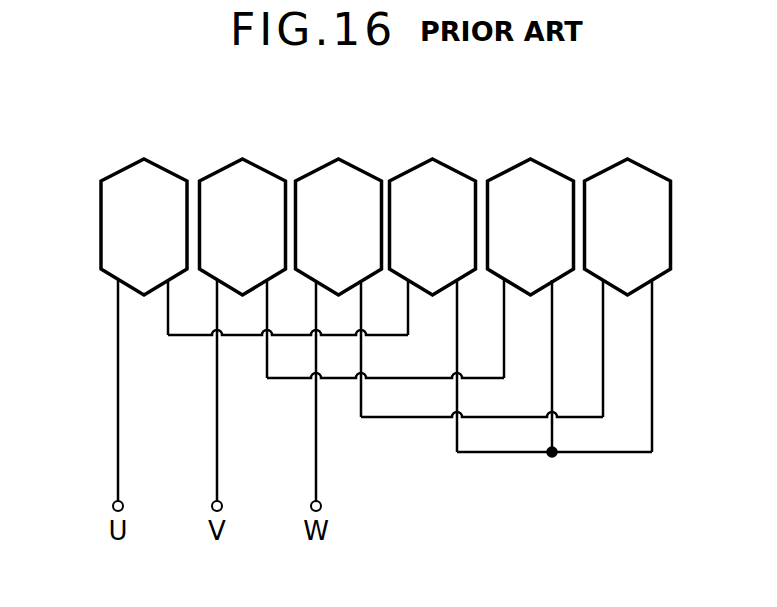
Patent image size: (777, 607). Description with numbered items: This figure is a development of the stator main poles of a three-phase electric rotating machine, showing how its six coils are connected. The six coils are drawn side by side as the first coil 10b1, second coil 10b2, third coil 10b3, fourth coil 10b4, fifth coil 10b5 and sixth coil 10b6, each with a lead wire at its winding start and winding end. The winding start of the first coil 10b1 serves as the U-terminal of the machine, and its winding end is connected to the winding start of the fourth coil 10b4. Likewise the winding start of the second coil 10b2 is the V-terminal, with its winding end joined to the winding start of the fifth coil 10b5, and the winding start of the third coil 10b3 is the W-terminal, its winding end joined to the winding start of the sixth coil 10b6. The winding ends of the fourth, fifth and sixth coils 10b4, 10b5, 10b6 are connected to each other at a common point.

The first coil 10b1 is at (117, 170).
The second coil 10b2 is at (216, 170).
The third coil 10b3 is at (312, 170).
The fourth coil 10b4 is at (406, 170).
The fifth coil 10b5 is at (504, 170).
The sixth coil 10b6 is at (601, 170).